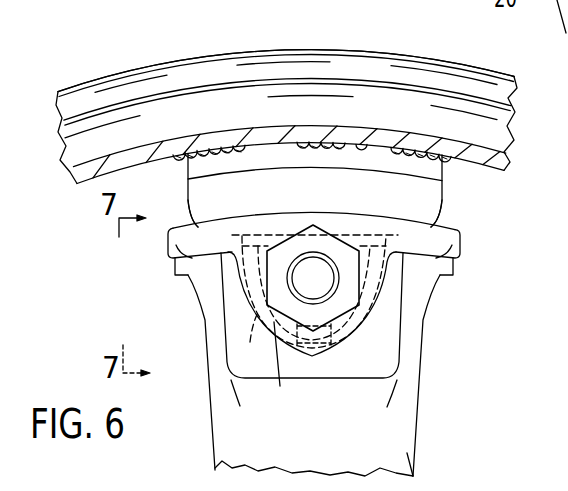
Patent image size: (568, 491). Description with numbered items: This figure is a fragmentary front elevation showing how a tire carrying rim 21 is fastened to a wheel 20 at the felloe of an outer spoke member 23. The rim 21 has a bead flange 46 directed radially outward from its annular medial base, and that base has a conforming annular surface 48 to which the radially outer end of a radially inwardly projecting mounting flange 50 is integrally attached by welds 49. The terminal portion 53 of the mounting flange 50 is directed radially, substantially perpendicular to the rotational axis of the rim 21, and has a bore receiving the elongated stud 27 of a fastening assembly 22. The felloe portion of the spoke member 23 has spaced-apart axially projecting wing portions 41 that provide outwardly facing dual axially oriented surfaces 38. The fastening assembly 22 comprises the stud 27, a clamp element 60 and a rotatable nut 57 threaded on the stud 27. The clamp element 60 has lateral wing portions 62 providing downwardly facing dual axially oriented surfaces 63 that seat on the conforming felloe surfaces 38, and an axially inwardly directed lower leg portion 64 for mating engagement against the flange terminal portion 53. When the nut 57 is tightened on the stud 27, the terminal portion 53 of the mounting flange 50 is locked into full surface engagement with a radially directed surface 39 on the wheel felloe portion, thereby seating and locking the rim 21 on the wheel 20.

The wheel 20 is at (317, 364).
The tire carrying rim 21 is at (176, 44).
The fastening assembly 22 is at (348, 229).
The spoke member 23 is at (407, 453).
The elongated stud 27 is at (313, 262).
The axially oriented surface 38 is at (172, 248).
The radially directed surface 39 is at (244, 342).
The wing portion 41 is at (210, 311).
The bead flange 46 is at (334, 50).
The conforming annular surface 48 is at (362, 147).
The weld 49 is at (203, 151).
The mounting flange 50 is at (452, 203).
The terminal portion 53 is at (345, 343).
The rotatable nut 57 is at (279, 365).
The clamp element 60 is at (258, 232).
The lateral wing portion 62 is at (197, 232).
The axially oriented surface 63 is at (183, 272).
The lower leg portion 64 is at (312, 352).